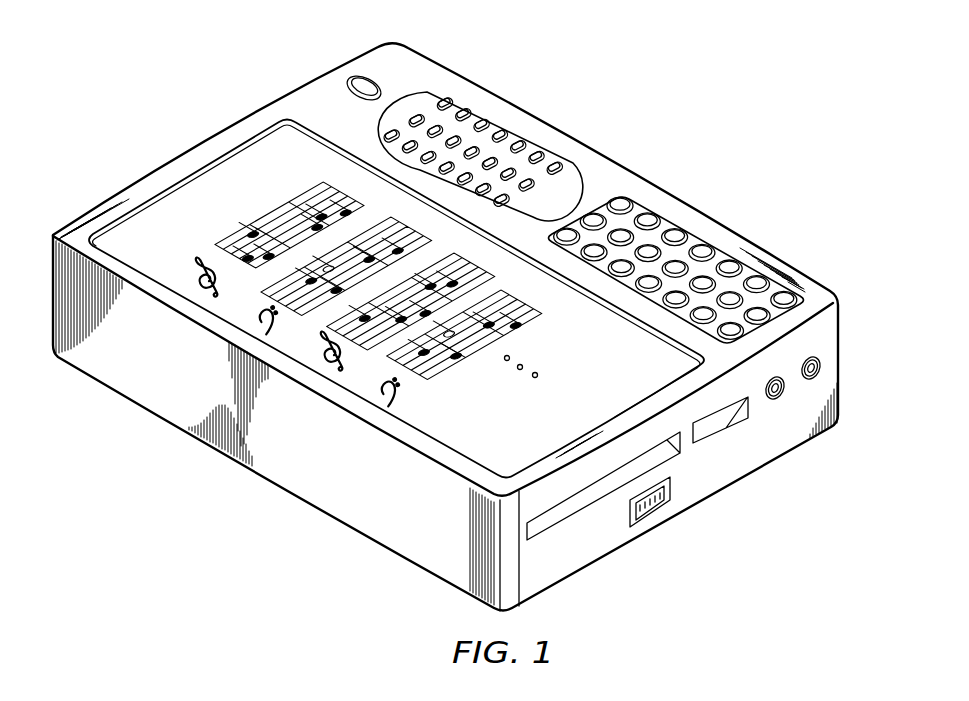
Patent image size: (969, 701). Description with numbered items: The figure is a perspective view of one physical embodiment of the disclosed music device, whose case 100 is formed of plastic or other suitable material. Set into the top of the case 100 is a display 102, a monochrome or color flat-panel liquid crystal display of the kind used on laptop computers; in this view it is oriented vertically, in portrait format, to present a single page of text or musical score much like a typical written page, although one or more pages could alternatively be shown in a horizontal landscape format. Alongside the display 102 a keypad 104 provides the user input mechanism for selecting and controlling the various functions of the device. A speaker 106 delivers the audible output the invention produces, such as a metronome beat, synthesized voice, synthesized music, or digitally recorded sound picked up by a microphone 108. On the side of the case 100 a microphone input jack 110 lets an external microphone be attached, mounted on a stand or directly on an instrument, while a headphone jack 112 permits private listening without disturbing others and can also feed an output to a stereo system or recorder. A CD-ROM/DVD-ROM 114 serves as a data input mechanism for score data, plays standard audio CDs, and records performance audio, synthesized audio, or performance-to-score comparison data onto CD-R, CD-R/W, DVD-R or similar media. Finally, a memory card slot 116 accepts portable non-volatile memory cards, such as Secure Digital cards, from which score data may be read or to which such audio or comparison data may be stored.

The case 100 is at (233, 63).
The display 102 is at (134, 228).
The keypad 104 is at (697, 240).
The speaker 106 is at (428, 96).
The microphone 108 is at (361, 79).
The microphone input jack 110 is at (784, 398).
The headphone jack 112 is at (821, 361).
The CD-ROM/DVD-ROM 114 is at (584, 501).
The memory card slot 116 is at (728, 416).